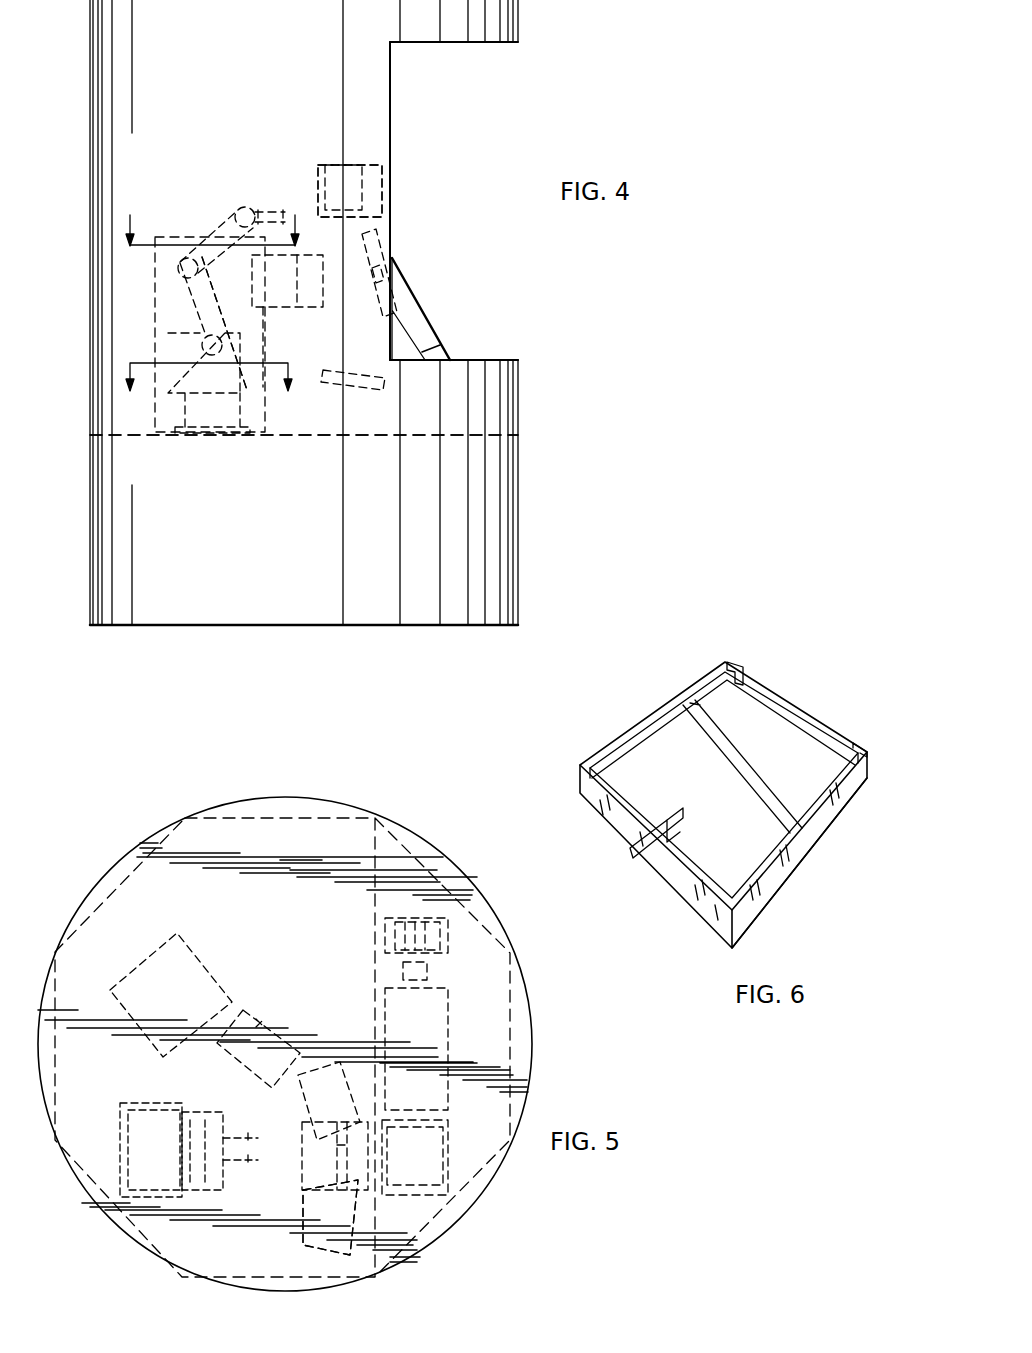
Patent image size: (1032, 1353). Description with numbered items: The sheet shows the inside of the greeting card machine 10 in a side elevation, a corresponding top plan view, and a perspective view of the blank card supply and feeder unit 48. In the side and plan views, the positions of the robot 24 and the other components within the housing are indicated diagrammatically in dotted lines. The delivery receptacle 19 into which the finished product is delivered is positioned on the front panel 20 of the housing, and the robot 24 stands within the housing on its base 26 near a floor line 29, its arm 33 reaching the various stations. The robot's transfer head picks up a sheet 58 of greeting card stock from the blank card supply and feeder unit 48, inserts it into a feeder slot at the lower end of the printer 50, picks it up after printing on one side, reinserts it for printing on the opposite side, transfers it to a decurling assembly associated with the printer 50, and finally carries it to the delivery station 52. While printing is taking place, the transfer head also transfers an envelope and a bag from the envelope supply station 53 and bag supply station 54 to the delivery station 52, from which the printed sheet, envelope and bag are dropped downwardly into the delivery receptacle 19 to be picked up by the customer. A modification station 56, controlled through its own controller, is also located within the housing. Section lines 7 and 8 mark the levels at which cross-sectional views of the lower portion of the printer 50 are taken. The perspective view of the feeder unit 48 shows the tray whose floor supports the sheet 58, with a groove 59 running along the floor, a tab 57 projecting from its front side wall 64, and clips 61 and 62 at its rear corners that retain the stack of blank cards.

In FIG. 4, the section line 7- 7 is at (209, 363).
In FIG. 4, the section line 8- 8 is at (211, 218).
In FIG. 4, the machine 10 is at (512, 110).
In FIG. 5, the machine 10 is at (457, 852).
In FIG. 4, the delivery receptacle 19 is at (422, 342).
In FIG. 5, the delivery receptacle 19 is at (468, 1214).
In FIG. 4, the front panel 20 is at (418, 303).
In FIG. 4, the robot 24 is at (245, 392).
In FIG. 5, the robot 24 is at (198, 1200).
In FIG. 4, the robot base 26 is at (168, 392).
In FIG. 4, the floor line 29 is at (196, 324).
In FIG. 4, the robot arm 33 is at (222, 216).
In FIG. 4, the blank card supply and feeder unit 48 is at (330, 382).
In FIG. 5, the blank card supply and feeder unit 48 is at (297, 1217).
In FIG. 6, the blank card supply and feeder unit 48 is at (611, 729).
In FIG. 4, the printer 50 is at (170, 234).
In FIG. 5, the printer 50 is at (187, 975).
In FIG. 4, the delivery station 52 is at (378, 230).
In FIG. 5, the delivery station 52 is at (305, 1170).
In FIG. 4, the envelope supply station 53 is at (337, 160).
In FIG. 5, the envelope supply station 53 is at (318, 1216).
In FIG. 4, the bag supply station 54 is at (320, 163).
In FIG. 5, the bag supply station 54 is at (315, 1070).
In FIG. 4, the modification station 56 is at (280, 297).
In FIG. 5, the modification station 56 is at (262, 1022).
In FIG. 6, the tab 57 is at (683, 836).
In FIG. 6, the sheet 58 is at (775, 733).
In FIG. 6, the groove 59 is at (816, 740).
In FIG. 6, the clip 61 is at (736, 663).
In FIG. 6, the clip 62 is at (853, 746).
In FIG. 6, the side wall 64 is at (797, 862).